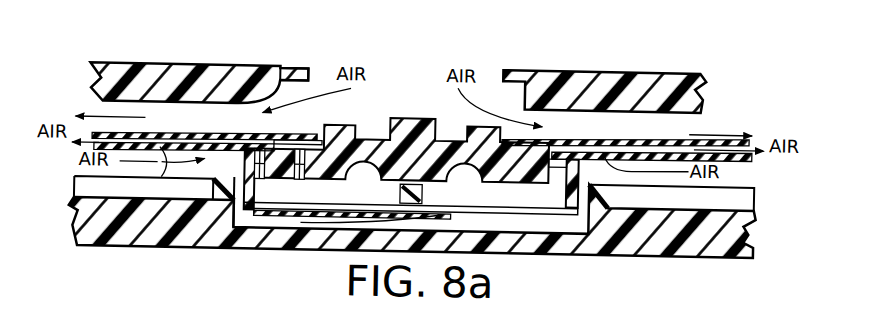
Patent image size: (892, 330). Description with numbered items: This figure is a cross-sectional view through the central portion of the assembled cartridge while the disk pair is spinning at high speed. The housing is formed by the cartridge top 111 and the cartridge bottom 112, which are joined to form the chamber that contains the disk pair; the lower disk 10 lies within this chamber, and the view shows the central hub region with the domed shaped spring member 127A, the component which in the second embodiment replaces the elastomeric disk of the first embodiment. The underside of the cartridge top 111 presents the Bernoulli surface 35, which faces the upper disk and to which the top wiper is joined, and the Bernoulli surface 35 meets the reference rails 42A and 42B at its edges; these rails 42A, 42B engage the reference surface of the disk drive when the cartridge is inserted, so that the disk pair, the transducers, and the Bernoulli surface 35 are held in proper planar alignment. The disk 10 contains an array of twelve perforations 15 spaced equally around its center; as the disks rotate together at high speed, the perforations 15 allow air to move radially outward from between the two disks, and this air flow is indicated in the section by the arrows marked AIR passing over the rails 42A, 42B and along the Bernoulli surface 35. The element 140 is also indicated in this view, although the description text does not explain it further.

The cartridge top 111 is at (221, 75).
The reference rail 42B is at (307, 67).
The reference rail 42A is at (500, 69).
The Bernoulli surface 35 is at (203, 101).
The perforations 15 is at (247, 130).
The disk 10 is at (160, 176).
The domed shaped spring member 127A is at (350, 206).
The nozzle element 140 is at (423, 193).
The cartridge bottom 112 is at (193, 236).